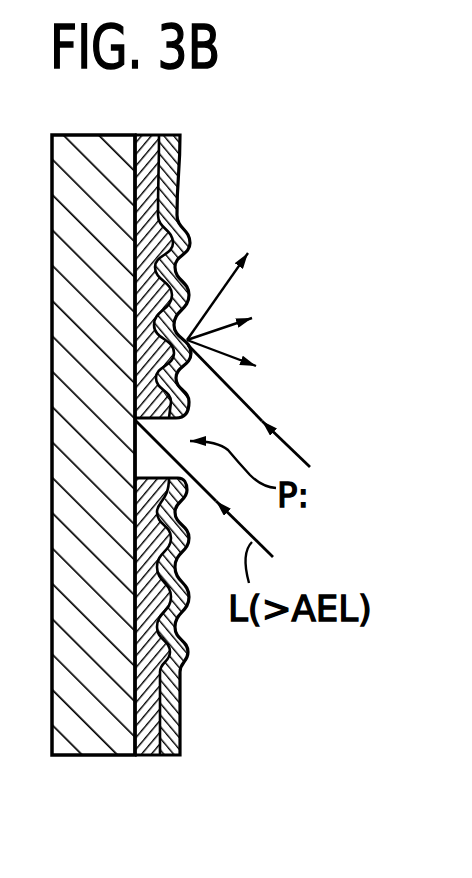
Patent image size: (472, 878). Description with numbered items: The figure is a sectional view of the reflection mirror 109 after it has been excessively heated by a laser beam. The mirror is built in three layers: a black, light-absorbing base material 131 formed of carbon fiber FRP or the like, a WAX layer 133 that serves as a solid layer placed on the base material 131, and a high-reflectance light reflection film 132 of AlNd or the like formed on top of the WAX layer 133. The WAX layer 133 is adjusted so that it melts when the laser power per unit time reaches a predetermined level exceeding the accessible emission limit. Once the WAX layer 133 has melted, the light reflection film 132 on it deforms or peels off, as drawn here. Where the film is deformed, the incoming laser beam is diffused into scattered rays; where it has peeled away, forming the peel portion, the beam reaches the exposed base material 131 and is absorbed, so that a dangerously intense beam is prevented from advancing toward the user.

The reflection mirror 109 is at (220, 205).
The base material 131 is at (80, 755).
The light reflection film 132 is at (163, 755).
The WAX layer 133 is at (147, 755).